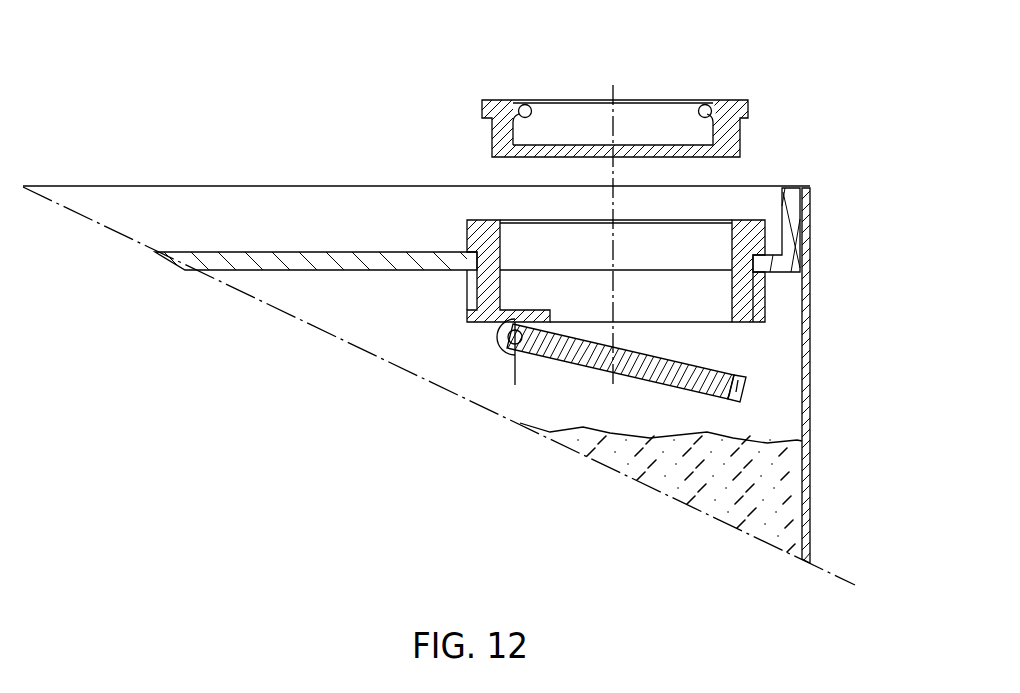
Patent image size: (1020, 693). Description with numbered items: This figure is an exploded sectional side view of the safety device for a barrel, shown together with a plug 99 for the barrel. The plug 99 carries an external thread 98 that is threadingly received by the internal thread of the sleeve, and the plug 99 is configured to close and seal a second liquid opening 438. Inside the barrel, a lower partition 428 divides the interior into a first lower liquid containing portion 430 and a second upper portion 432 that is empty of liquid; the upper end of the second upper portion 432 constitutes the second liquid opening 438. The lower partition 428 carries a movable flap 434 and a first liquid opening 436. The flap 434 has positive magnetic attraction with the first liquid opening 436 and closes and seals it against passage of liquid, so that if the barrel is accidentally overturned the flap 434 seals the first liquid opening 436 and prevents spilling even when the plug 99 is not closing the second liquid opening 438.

The plug 99 is at (683, 79).
The external thread 98 is at (490, 143).
The second liquid opening 438 is at (707, 220).
The second upper portion 432 is at (712, 302).
The lower partition 428 is at (794, 335).
The first liquid opening 436 is at (707, 323).
The first lower liquid containing portion 430 is at (778, 422).
The movable flap 434 is at (580, 362).